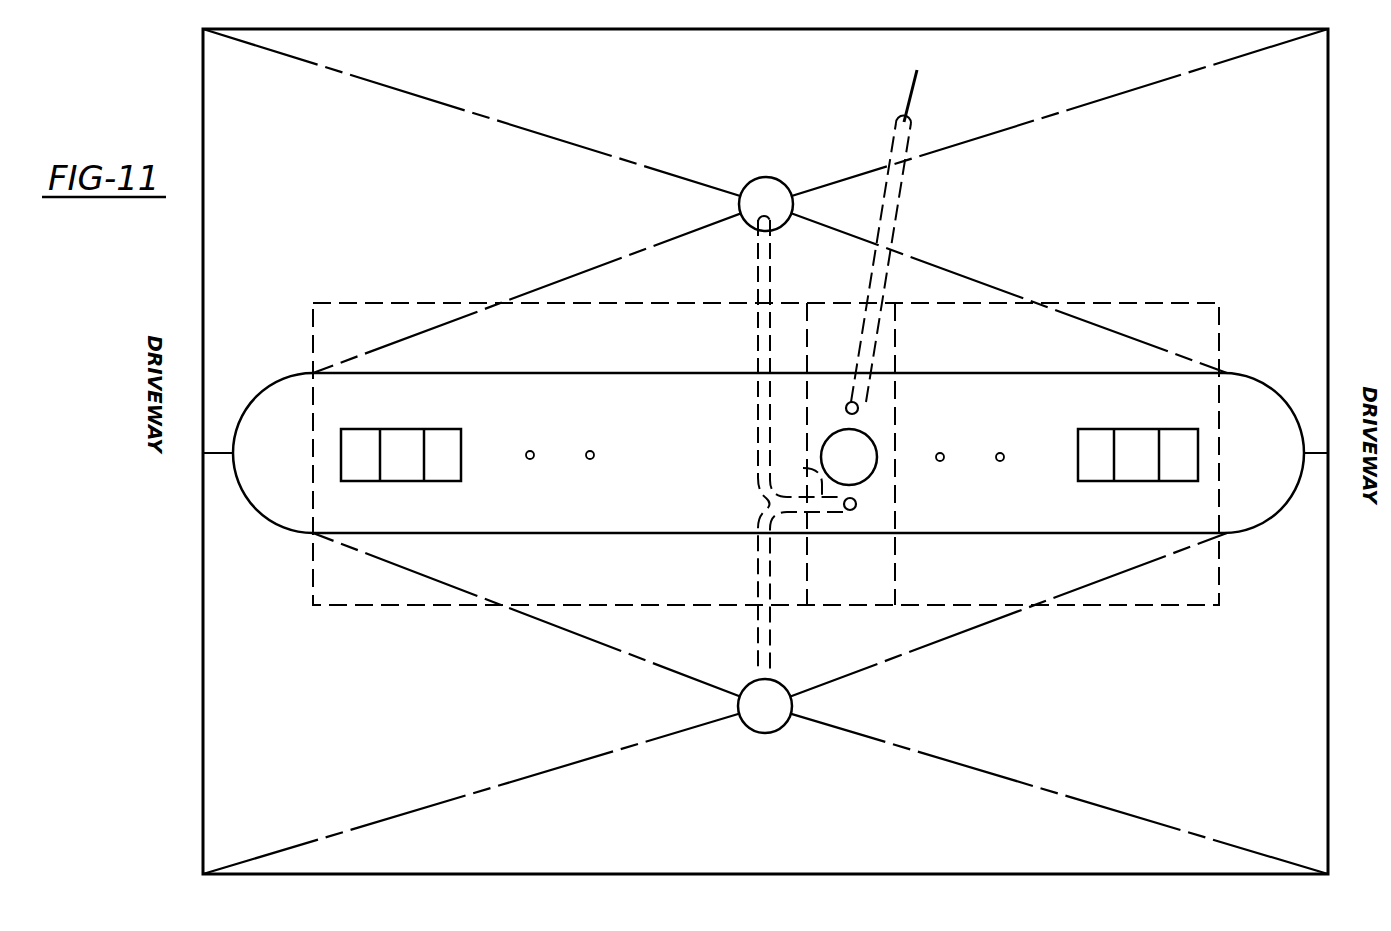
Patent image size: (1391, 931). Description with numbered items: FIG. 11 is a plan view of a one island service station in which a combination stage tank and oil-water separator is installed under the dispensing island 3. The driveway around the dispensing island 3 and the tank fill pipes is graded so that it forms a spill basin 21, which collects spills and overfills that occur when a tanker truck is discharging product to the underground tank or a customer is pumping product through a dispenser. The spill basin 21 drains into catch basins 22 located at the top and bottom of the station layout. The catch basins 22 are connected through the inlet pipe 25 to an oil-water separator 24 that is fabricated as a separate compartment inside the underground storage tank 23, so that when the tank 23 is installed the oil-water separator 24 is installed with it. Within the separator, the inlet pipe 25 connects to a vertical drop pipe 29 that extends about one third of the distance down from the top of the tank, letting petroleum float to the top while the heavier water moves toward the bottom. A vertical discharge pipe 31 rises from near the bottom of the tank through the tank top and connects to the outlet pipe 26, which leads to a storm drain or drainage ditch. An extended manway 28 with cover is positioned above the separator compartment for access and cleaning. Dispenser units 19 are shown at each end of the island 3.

The dispensing island 3 is at (428, 520).
The dwelling unit 19 is at (414, 468).
The spill basin 21 is at (203, 157).
The catch basin 22 is at (780, 178).
The underground storage tank 23 is at (617, 601).
The oil-water separator 24 is at (868, 601).
The inlet pipe 25 is at (804, 470).
The outlet pipe 26 is at (898, 232).
The extended manway 28 is at (858, 461).
The vertical drop pipe 29 is at (856, 504).
The vertical discharge pipe 31 is at (858, 410).